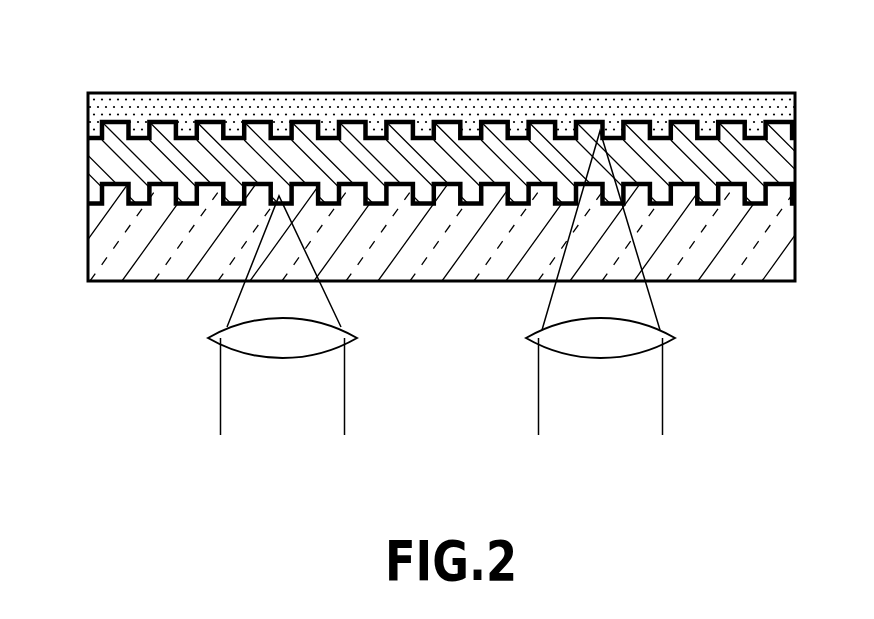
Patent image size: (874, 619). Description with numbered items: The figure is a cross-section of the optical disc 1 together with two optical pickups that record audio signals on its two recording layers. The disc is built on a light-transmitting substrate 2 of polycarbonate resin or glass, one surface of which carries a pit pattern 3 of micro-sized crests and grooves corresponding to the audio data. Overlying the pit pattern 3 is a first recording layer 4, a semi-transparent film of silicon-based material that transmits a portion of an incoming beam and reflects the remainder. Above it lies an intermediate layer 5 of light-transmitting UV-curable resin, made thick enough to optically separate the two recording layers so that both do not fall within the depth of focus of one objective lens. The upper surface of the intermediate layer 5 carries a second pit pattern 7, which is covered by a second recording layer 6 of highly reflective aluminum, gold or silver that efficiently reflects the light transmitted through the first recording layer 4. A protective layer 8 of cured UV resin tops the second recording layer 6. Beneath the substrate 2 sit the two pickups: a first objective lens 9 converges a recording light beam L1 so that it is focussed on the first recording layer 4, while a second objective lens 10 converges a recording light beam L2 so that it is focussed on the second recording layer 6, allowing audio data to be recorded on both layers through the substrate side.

The optical disc 1 is at (634, 79).
The substrate 2 is at (98, 239).
The pit pattern 3 is at (771, 217).
The first recording layer 4 is at (791, 168).
The intermediate layer 5 is at (441, 172).
The second recording layer 6 is at (771, 148).
The pit pattern 7 is at (794, 103).
The protective layer 8 is at (439, 115).
The first objective lens 9 is at (280, 343).
The second objective lens 10 is at (597, 343).
The recording light beam L1 is at (230, 308).
The recording light beam L2 is at (658, 310).